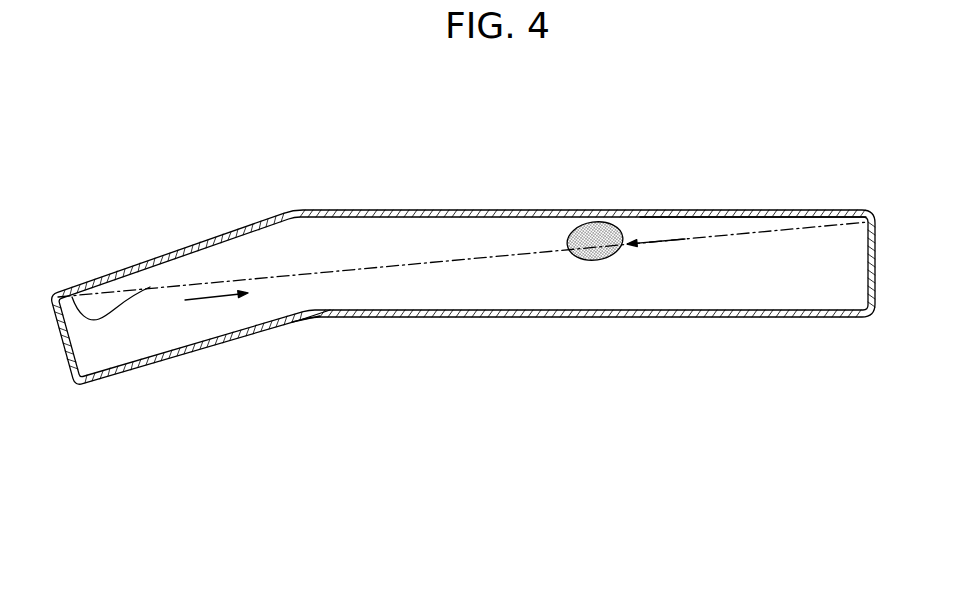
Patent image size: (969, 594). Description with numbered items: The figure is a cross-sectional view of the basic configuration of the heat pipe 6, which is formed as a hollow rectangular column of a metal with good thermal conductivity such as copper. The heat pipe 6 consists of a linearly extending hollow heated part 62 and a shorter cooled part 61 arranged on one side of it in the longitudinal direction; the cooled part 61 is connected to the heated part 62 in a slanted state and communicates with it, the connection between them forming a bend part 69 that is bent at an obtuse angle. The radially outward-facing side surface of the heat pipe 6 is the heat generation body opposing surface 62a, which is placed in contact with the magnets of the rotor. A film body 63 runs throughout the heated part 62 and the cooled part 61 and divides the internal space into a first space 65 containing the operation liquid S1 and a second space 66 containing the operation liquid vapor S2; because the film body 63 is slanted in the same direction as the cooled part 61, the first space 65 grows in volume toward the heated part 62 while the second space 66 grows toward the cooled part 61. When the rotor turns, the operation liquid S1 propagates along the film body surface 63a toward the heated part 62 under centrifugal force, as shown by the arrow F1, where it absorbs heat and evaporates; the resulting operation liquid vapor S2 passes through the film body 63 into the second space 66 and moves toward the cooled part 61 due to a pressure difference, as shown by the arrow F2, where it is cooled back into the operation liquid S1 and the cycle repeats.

The heat pipe 6 is at (512, 360).
The cooled part 61 is at (187, 246).
The heated part 62 is at (434, 210).
The heat generation body opposing surface 62a is at (645, 210).
The film body 63 is at (442, 260).
The film body surface 63a is at (365, 268).
The first space 65 is at (744, 301).
The second space 66 is at (330, 255).
The bend part 69 is at (320, 315).
The operation liquid S1 is at (105, 308).
The operation liquid vapor S2 is at (603, 223).
The arrow F1 is at (216, 314).
The arrow F2 is at (656, 260).